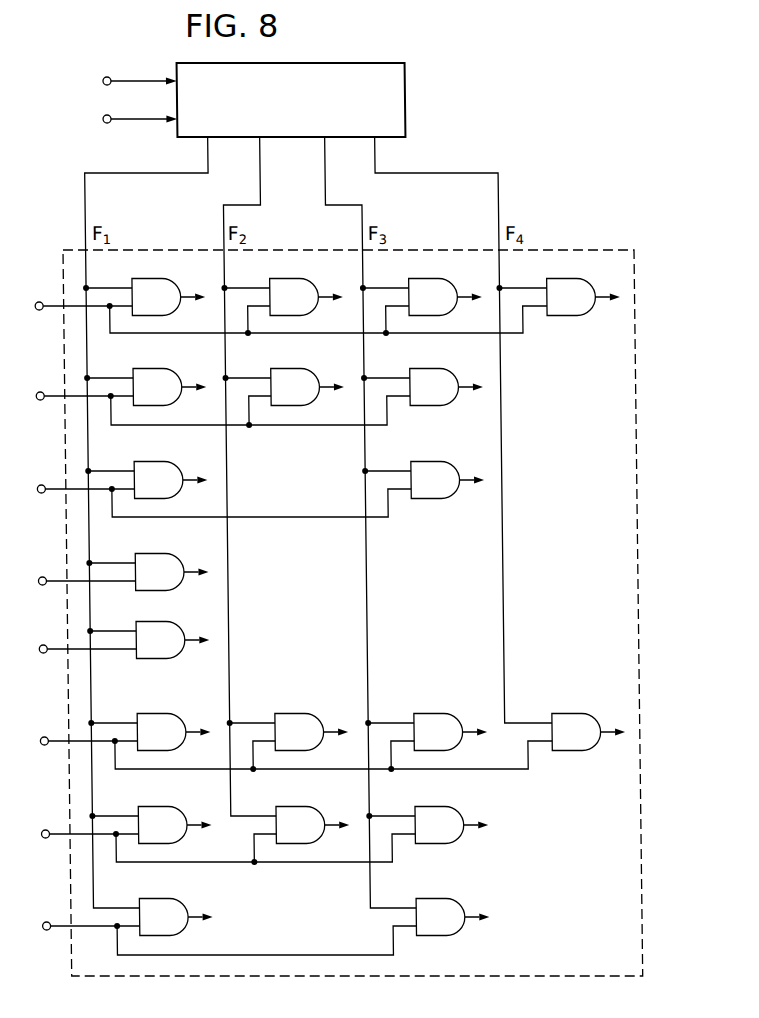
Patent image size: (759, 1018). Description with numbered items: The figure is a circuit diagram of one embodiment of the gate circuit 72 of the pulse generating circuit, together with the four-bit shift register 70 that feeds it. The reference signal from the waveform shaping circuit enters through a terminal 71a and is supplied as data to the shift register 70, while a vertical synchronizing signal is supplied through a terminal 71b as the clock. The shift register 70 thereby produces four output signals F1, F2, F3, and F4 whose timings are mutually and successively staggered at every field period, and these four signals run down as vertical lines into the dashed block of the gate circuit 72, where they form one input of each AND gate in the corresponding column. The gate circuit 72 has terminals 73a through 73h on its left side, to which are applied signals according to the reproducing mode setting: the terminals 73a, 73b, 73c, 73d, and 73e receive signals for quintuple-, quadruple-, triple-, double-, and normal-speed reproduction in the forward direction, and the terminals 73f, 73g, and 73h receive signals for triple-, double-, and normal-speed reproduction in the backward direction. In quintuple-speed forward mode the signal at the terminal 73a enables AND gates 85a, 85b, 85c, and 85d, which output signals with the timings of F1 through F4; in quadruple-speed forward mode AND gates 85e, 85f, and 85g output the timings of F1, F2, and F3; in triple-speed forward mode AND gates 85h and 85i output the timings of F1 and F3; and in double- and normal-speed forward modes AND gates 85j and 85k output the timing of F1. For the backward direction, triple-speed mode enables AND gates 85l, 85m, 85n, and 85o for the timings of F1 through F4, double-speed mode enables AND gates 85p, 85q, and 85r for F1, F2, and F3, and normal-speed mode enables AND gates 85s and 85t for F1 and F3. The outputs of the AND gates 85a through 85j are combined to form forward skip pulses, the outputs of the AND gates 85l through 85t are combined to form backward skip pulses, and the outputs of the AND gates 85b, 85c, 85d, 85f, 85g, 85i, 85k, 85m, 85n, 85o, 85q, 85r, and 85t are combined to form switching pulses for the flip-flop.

The 4-bit shift register 70 is at (404, 88).
The terminal 71a is at (102, 76).
The terminal 71b is at (102, 124).
The gate circuit 72 is at (548, 249).
The terminal 73a is at (34, 300).
The terminal 73b is at (34, 390).
The terminal 73c is at (34, 483).
The terminal 73d is at (34, 575).
The terminal 73e is at (34, 643).
The terminal 73f is at (34, 735).
The terminal 73g is at (34, 828).
The terminal 73h is at (34, 920).
The AND gate 85a is at (161, 278).
The AND gate 85b is at (298, 278).
The AND gate 85c is at (437, 278).
The AND gate 85d is at (575, 278).
The AND gate 85e is at (161, 368).
The AND gate 85f is at (298, 368).
The AND gate 85g is at (437, 368).
The AND gate 85h is at (161, 461).
The AND gate 85i is at (437, 461).
The AND gate 85j is at (161, 553).
The AND gate 85k is at (161, 621).
The AND gate 85l is at (161, 713).
The AND gate 85m is at (298, 713).
The AND gate 85n is at (437, 713).
The AND gate 85o is at (575, 713).
The AND gate 85p is at (161, 806).
The AND gate 85q is at (298, 806).
The AND gate 85r is at (437, 806).
The AND gate 85s is at (161, 898).
The AND gate 85t is at (437, 898).